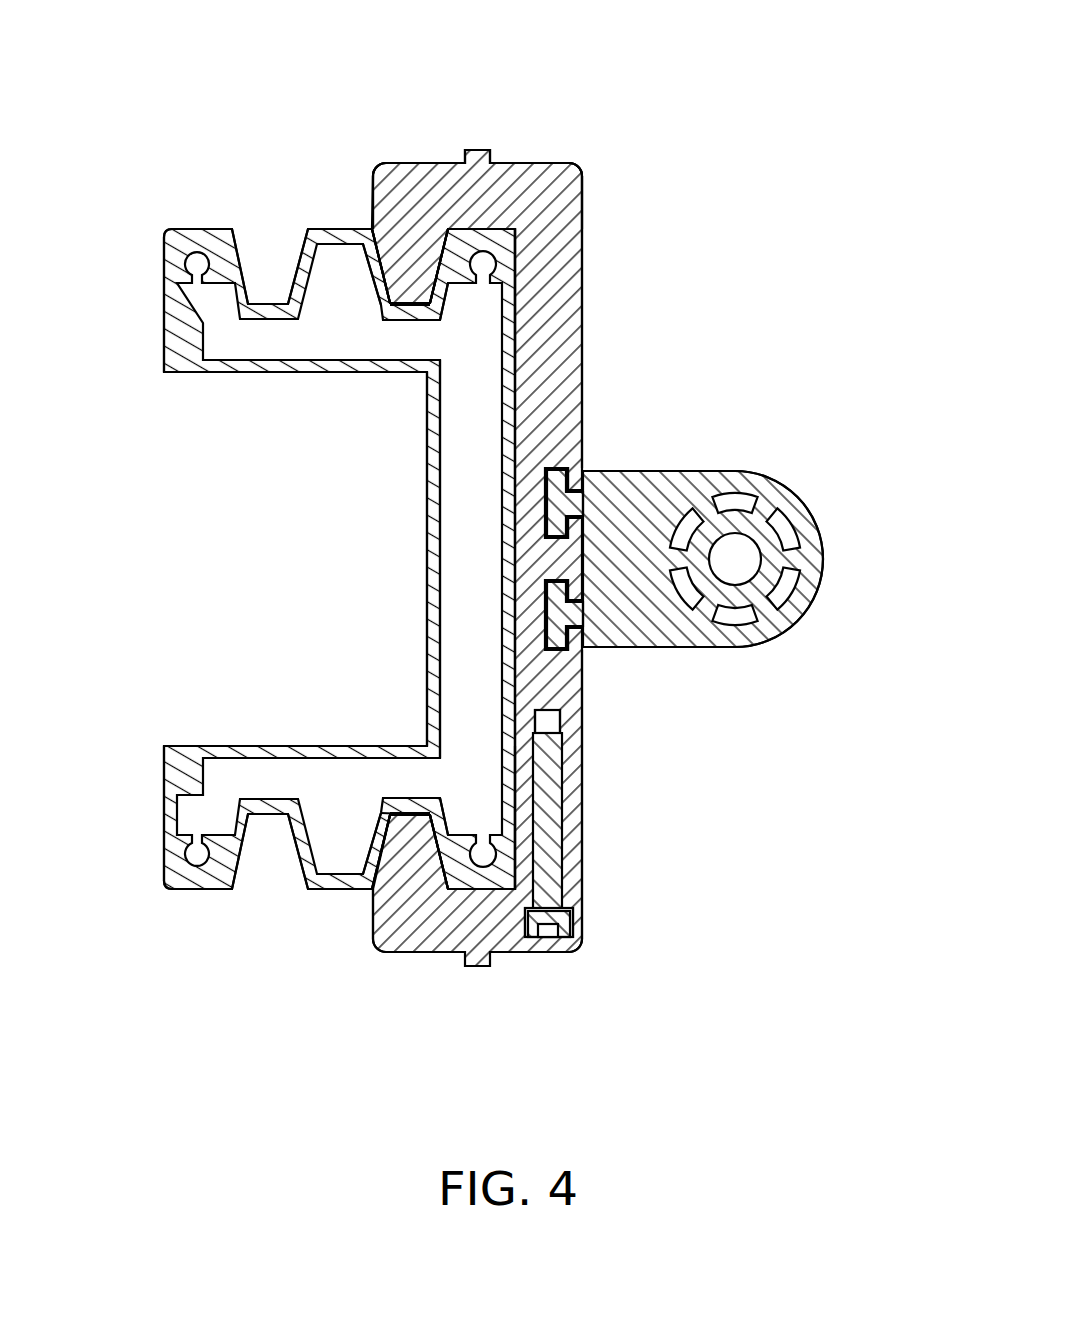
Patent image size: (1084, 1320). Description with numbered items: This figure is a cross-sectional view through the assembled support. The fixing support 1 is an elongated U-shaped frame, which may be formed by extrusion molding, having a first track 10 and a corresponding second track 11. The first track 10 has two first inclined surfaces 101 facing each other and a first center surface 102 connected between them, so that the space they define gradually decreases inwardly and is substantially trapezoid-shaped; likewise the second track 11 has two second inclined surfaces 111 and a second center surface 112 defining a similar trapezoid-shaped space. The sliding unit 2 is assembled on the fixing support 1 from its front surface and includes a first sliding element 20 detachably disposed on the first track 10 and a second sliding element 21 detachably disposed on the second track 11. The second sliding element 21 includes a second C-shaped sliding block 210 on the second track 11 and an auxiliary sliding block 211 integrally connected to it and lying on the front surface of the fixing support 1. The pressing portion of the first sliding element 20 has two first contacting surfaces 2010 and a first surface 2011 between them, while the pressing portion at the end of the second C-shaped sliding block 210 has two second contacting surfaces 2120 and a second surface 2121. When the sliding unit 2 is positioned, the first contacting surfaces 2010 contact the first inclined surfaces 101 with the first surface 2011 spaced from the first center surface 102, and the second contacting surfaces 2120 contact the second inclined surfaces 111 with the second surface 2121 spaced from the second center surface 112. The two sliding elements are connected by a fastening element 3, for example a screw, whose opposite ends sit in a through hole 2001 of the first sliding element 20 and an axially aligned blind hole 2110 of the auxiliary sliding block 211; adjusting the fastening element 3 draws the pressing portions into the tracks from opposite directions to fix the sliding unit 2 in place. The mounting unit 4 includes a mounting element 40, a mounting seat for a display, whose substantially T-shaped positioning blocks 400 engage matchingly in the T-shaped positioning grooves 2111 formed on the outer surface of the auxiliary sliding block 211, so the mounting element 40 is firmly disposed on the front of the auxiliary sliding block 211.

The fixing support 1 is at (423, 564).
The second track 11 is at (510, 268).
The first track 10 is at (510, 868).
The second inclined surfaces 111 is at (372, 284).
The second center surface 112 is at (418, 322).
The first inclined surfaces 101 is at (376, 838).
The first center surface 102 is at (403, 797).
The sliding unit 2 is at (661, 54).
The second sliding element 21 is at (658, 97).
The first sliding element 20 is at (592, 837).
The second C-shaped sliding block 210 is at (503, 187).
The auxiliary sliding block 211 is at (557, 258).
The second contacting surfaces 2120 is at (395, 240).
The second surface 2121 is at (412, 302).
The positioning grooves 2111 is at (566, 476).
The blind holes 2110 is at (548, 723).
The first contacting surfaces 2010 is at (395, 868).
The first surface 2011 is at (413, 820).
The through holes 2001 is at (562, 942).
The fastening element 3 is at (543, 945).
The mounting unit 4 is at (790, 468).
The mounting element 40 is at (753, 520).
The positioning block 400 is at (553, 512).